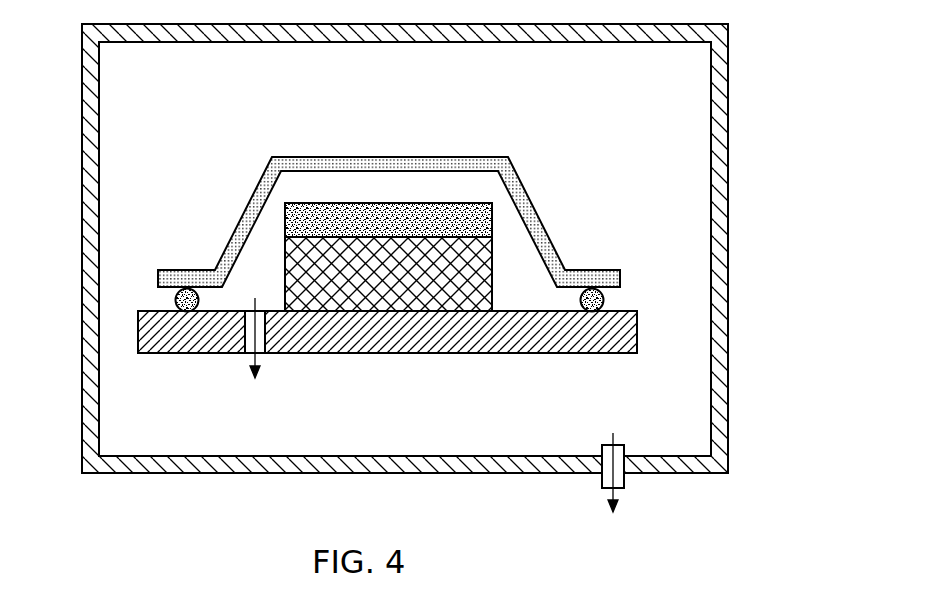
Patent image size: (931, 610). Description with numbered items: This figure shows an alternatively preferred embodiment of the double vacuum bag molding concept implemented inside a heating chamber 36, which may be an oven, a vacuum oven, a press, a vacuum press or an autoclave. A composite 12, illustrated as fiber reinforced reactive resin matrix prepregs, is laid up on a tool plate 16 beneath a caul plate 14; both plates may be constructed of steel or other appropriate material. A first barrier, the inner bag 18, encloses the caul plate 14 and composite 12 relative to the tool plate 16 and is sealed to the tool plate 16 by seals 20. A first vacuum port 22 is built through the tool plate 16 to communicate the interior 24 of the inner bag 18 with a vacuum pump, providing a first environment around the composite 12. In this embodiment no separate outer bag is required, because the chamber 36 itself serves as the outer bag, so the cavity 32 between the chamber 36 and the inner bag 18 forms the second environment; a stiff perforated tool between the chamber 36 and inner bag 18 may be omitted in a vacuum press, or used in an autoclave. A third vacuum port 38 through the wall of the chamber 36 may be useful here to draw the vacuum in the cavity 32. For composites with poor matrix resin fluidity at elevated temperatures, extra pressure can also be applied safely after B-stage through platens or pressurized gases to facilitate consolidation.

The composite 12 is at (416, 274).
The caul plate 14 is at (388, 207).
The tool plate 16 is at (387, 349).
The inner bag 18 is at (389, 203).
The seals 20 is at (402, 296).
The first vacuum port 22 is at (286, 343).
The interior 24 is at (272, 273).
The cavity 32 is at (524, 125).
The heating chamber 36 is at (433, 248).
The third vacuum port 38 is at (642, 466).